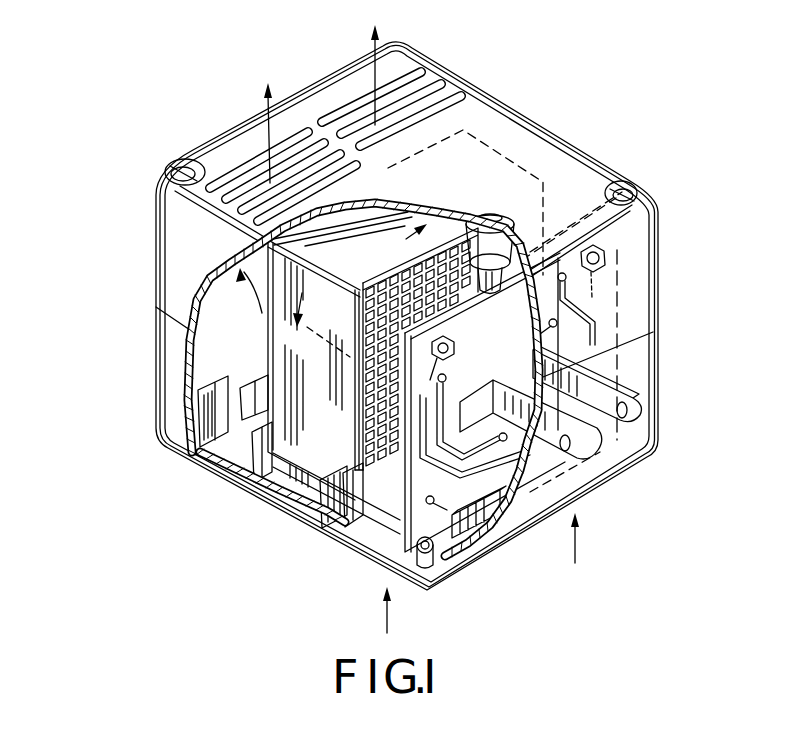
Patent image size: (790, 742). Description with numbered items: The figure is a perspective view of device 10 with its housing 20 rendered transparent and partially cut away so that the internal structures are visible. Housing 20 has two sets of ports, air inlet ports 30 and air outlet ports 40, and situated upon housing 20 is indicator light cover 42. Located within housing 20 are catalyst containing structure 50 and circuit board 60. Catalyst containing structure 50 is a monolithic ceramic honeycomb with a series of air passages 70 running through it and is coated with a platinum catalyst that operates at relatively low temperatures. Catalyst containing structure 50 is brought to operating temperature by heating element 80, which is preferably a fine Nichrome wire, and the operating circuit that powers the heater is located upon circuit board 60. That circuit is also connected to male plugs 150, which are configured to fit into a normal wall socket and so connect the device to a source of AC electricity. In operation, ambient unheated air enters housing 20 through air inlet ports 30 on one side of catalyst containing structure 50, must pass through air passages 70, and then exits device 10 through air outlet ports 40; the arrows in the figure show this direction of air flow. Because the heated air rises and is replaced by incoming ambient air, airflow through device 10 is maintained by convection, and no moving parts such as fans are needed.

The device 10 is at (116, 316).
The housing 20 is at (563, 138).
The air inlet ports 30 is at (353, 538).
The air outlet ports 40 is at (420, 62).
The indicator light cover 42 is at (493, 218).
The catalyst containing structure 50 is at (288, 350).
The circuit board 60 is at (370, 390).
The air passages 70 is at (407, 277).
The heating element 80 is at (367, 327).
The male plugs 150 is at (647, 421).